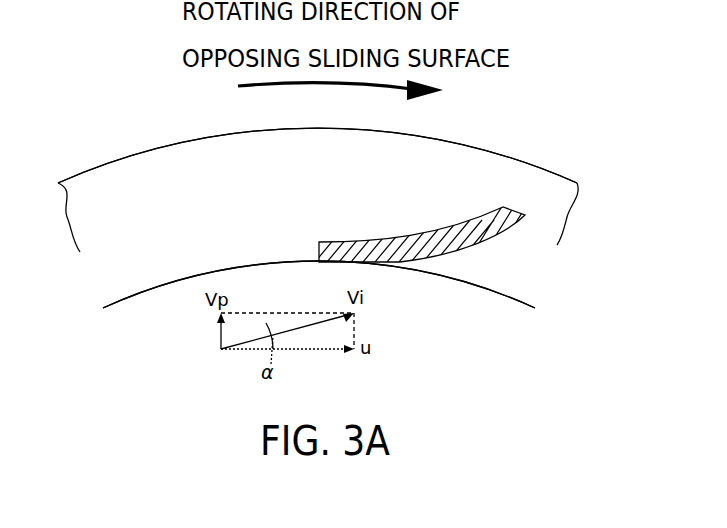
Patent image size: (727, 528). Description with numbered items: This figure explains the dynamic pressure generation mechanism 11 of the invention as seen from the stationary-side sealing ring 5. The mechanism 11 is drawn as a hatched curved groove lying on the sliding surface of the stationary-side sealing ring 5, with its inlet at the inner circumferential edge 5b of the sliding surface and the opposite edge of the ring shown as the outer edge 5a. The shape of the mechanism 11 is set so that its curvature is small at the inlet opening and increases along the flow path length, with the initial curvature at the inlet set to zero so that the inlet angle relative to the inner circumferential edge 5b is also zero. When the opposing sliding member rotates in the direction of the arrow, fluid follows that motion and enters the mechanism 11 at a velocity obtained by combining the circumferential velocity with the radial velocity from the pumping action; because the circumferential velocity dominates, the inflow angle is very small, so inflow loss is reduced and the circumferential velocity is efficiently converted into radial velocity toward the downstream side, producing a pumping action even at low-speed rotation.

The stationary-side sealing ring 5 is at (541, 158).
The outer surface of sliding component 5a is at (118, 160).
The inner circumferential edge of the sliding surface 5b is at (463, 283).
The dynamic pressure generation mechanism 11 is at (443, 232).